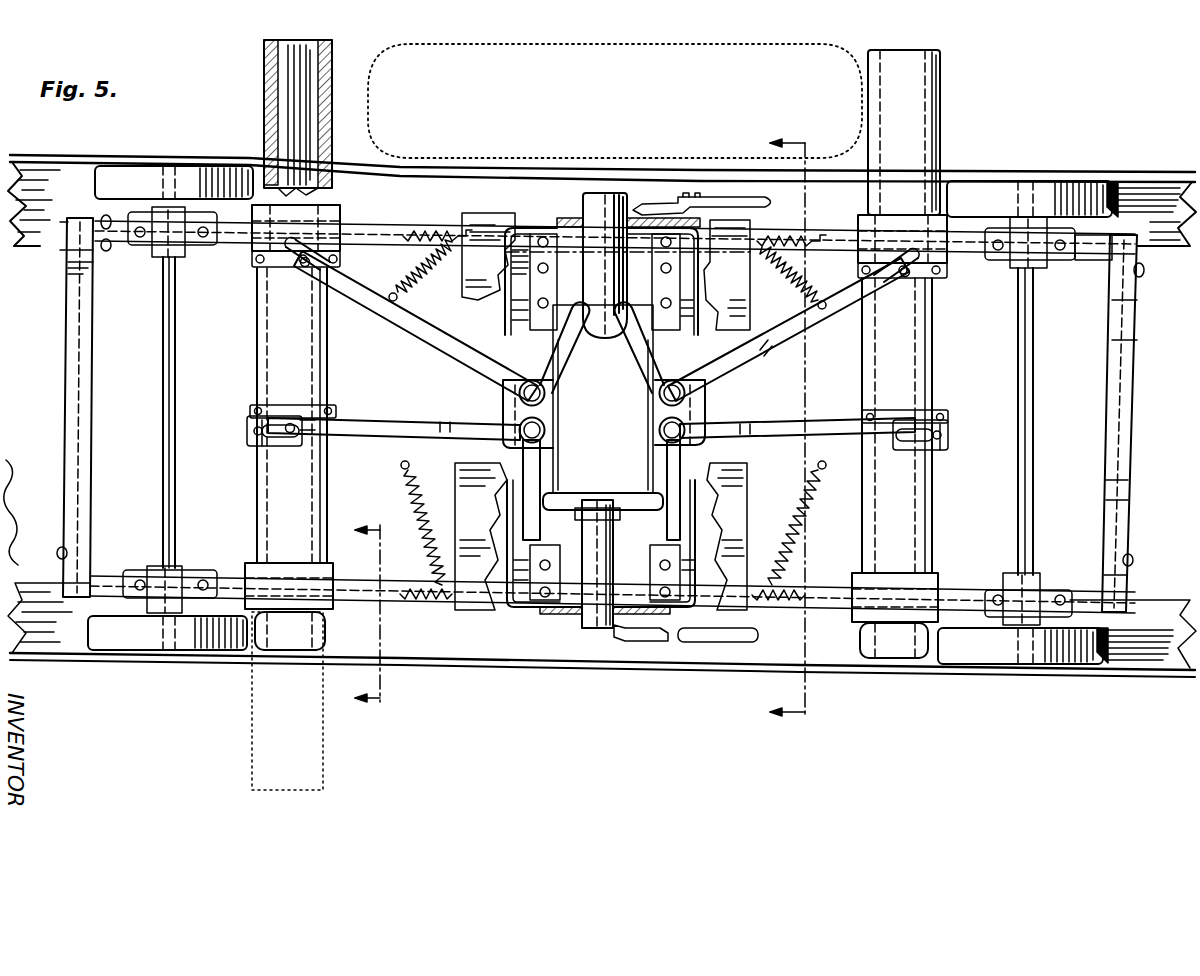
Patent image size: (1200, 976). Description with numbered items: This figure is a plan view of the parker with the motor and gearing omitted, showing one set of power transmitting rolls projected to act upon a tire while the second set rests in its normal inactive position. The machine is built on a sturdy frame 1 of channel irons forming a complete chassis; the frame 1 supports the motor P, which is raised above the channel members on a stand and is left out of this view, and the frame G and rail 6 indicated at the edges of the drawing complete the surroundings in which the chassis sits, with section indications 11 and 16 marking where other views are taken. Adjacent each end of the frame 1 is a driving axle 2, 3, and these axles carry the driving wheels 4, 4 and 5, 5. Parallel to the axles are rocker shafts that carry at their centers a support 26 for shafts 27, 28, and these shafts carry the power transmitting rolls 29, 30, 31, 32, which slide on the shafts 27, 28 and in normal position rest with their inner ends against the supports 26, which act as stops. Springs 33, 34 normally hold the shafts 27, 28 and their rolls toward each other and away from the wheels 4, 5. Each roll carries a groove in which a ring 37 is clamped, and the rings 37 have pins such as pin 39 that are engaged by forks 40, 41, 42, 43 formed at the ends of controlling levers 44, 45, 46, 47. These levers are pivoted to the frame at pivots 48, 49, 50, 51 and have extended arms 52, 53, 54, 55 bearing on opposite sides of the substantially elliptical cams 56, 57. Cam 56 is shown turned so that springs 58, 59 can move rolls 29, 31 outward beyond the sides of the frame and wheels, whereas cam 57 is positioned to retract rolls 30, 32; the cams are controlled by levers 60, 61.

The frame 1 is at (82, 280).
The driving axle 2 is at (166, 290).
The driving axle 3 is at (1028, 290).
The driving wheels 4 is at (110, 182).
The driving wheels 5 is at (968, 200).
The rail 6 is at (1152, 648).
The frame rail G is at (40, 215).
The motor P is at (490, 300).
The section line 11 is at (771, 429).
The section line 16 is at (354, 614).
The support 26 is at (288, 404).
The shaft 27 is at (280, 352).
The shaft 28 is at (900, 335).
The power transmitting roll 29 is at (292, 96).
The power transmitting roll 30 is at (278, 522).
The power transmitting roll 31 is at (935, 80).
The power transmitting roll 32 is at (905, 483).
The spring 33 is at (365, 232).
The spring 34 is at (425, 540).
The ring 37 is at (290, 257).
The pin 39 is at (300, 268).
The fork 40 is at (300, 262).
The fork 41 is at (900, 278).
The fork 42 is at (277, 427).
The fork 43 is at (922, 438).
The controlling lever 44 is at (418, 340).
The controlling lever 45 is at (768, 350).
The controlling lever 46 is at (402, 430).
The controlling lever 47 is at (742, 432).
The pivot 48 is at (538, 398).
The pivot 49 is at (666, 398).
The pivot 50 is at (540, 435).
The pivot 51 is at (666, 436).
The extended arm 52 is at (565, 347).
The extended arm 53 is at (640, 347).
The extended arm 54 is at (536, 472).
The extended arm 55 is at (668, 472).
The cam 56 is at (605, 308).
The cam 57 is at (573, 528).
The spring 58 is at (428, 275).
The spring 59 is at (790, 268).
The lever 60 is at (700, 196).
The lever 61 is at (635, 628).